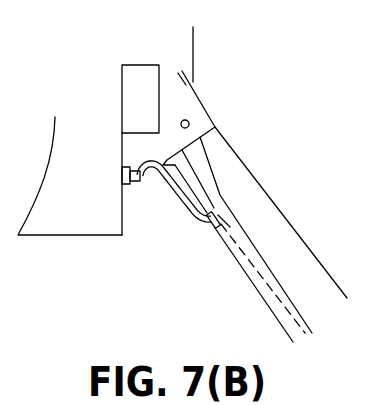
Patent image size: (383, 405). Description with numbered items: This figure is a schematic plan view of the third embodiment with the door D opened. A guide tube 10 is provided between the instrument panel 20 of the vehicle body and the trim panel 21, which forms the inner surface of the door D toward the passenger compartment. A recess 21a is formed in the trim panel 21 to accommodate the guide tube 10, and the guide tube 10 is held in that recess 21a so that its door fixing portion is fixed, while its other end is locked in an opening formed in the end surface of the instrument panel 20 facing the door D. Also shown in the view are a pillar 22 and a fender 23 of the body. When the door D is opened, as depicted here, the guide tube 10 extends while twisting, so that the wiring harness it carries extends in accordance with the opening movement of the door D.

The guide tube 10 is at (178, 197).
The instrument panel 20 is at (78, 222).
The trim panel 21 is at (250, 273).
The recess 21a is at (203, 187).
The pillar 22 is at (140, 75).
The fender 23 is at (193, 47).
The door D is at (241, 129).